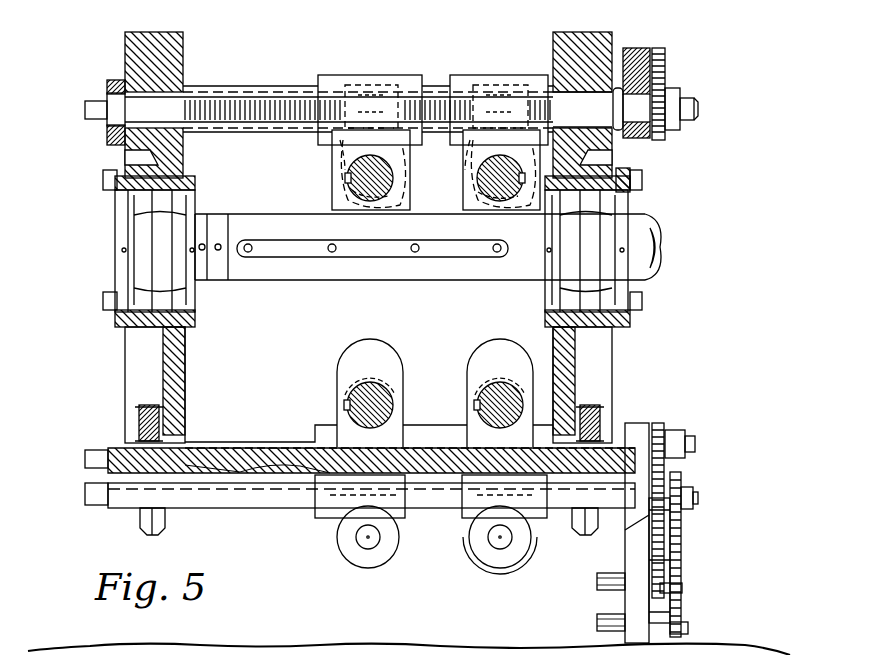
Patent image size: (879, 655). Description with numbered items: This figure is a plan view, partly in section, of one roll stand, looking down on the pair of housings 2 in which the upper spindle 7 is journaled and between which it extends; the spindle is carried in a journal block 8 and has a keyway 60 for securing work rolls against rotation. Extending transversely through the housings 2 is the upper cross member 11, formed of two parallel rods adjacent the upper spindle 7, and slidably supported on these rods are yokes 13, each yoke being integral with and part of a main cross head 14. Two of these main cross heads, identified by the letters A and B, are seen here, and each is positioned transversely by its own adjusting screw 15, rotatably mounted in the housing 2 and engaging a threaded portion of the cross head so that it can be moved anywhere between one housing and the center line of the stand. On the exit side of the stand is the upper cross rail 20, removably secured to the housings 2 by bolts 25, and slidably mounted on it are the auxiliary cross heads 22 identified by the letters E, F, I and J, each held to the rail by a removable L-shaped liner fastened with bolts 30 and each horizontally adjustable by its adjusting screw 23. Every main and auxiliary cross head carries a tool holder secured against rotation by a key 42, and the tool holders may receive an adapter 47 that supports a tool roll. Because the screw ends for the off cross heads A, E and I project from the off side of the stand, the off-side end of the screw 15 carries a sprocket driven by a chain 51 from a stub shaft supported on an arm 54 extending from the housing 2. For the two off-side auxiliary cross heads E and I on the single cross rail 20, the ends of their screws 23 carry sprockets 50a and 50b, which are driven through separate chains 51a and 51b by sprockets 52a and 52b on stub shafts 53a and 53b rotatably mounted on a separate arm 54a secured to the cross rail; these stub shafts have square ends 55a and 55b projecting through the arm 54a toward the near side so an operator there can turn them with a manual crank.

The housing 2 is at (186, 366).
The upper spindle 7 is at (428, 262).
The journal block 8 is at (632, 180).
The upper cross member 11 is at (368, 118).
The yoke 13 is at (463, 157).
The main cross head 14 is at (463, 175).
The adjusting screw 15 is at (198, 98).
The upper cross rail 20 is at (286, 484).
The auxiliary cross head 22 is at (467, 415).
The adjusting screw 23 is at (696, 452).
The bolt 25 is at (167, 525).
The bolt 30 is at (318, 428).
The key 42 is at (346, 178).
The adapter 47 is at (478, 193).
The chain 51 is at (665, 72).
The arm 54 is at (631, 48).
The arm 54a is at (638, 424).
The sprocket 50a is at (666, 428).
The sprocket 50b is at (684, 540).
The chain 51a is at (682, 482).
The chain 51b is at (683, 518).
The sprocket 52a is at (682, 590).
The sprocket 52b is at (690, 628).
The stub shaft 53a is at (684, 567).
The stub shaft 53b is at (684, 615).
The square end 55a is at (597, 585).
The square end 55b is at (597, 622).
The keyway 60 is at (352, 258).
The main cross head A is at (463, 207).
The main cross head B is at (332, 158).
The auxiliary cross head E is at (522, 566).
The auxiliary cross head F is at (340, 562).
The auxiliary cross head I is at (526, 390).
The auxiliary cross head J is at (340, 392).